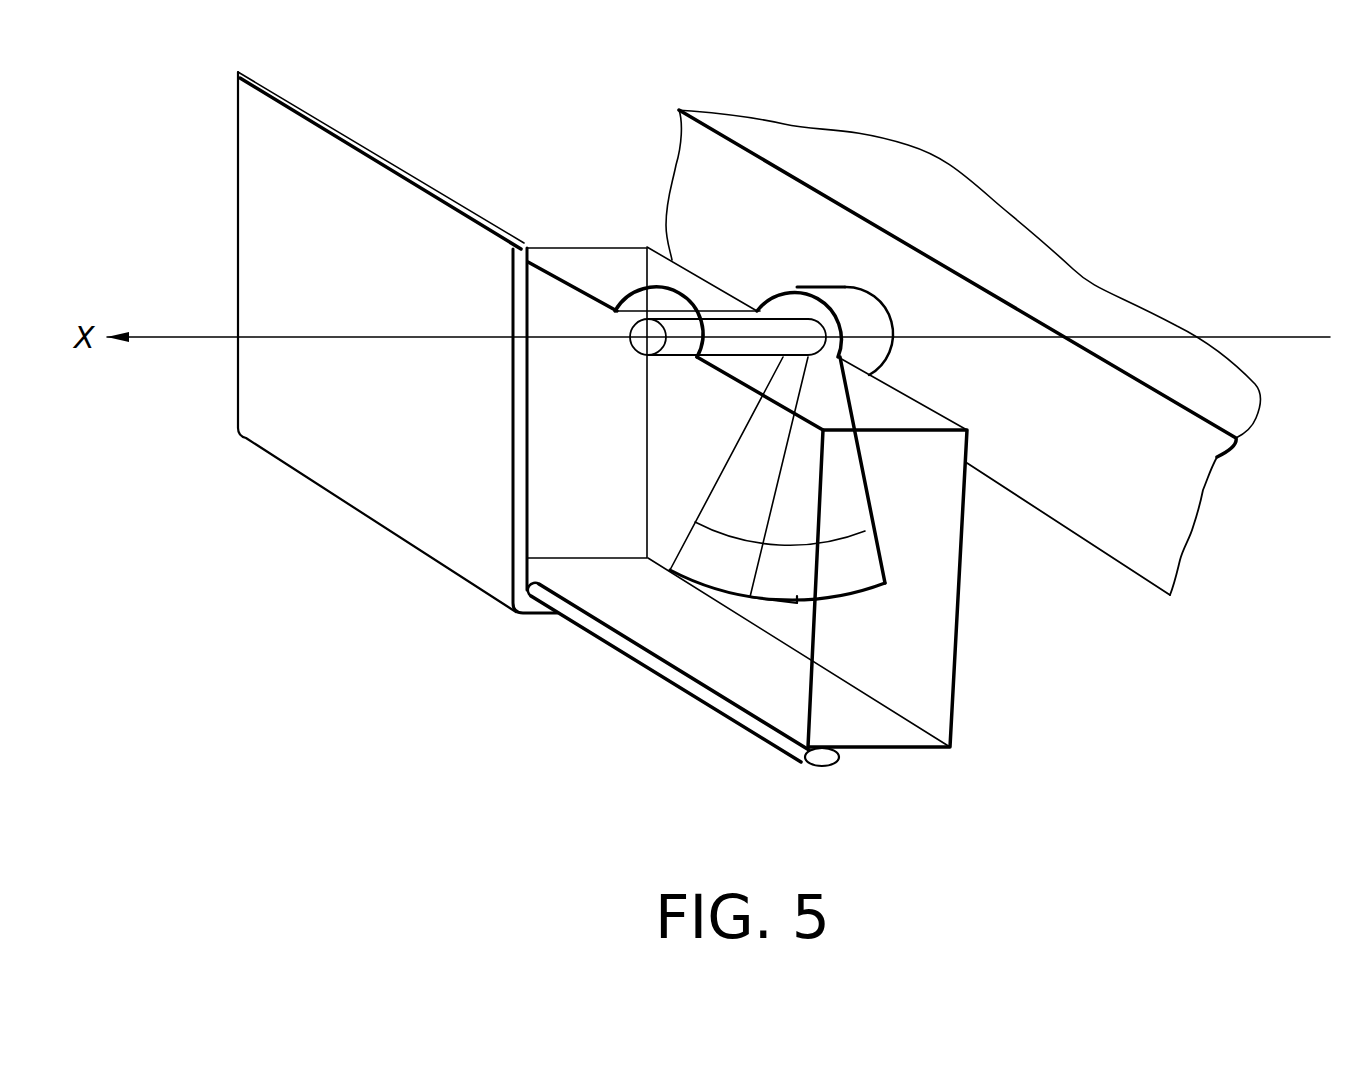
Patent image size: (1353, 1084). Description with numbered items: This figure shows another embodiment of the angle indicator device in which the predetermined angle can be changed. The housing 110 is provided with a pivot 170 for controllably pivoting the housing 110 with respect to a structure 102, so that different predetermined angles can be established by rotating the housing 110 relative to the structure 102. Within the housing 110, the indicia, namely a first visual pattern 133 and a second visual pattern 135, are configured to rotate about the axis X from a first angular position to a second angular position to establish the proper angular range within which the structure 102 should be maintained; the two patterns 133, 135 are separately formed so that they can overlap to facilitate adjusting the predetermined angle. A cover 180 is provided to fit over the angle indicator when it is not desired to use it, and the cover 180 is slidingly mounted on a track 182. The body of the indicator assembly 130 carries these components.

The structure 102 is at (1142, 497).
The housing 110 is at (956, 706).
The hinge housing 130 is at (666, 481).
The first visual pattern 133 is at (783, 568).
The second visual pattern 135 is at (745, 579).
The pivot 170 is at (632, 347).
The cover 180 is at (355, 259).
The track 182 is at (808, 766).